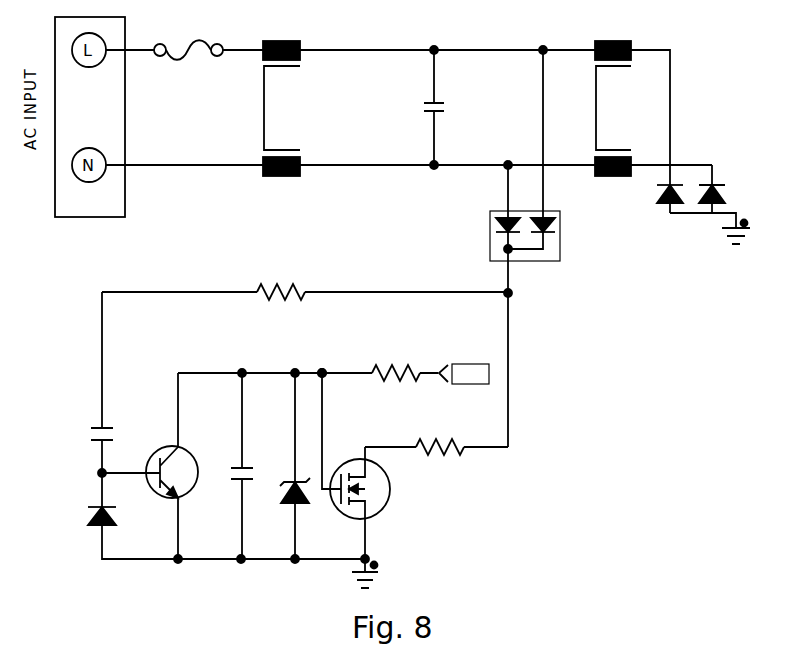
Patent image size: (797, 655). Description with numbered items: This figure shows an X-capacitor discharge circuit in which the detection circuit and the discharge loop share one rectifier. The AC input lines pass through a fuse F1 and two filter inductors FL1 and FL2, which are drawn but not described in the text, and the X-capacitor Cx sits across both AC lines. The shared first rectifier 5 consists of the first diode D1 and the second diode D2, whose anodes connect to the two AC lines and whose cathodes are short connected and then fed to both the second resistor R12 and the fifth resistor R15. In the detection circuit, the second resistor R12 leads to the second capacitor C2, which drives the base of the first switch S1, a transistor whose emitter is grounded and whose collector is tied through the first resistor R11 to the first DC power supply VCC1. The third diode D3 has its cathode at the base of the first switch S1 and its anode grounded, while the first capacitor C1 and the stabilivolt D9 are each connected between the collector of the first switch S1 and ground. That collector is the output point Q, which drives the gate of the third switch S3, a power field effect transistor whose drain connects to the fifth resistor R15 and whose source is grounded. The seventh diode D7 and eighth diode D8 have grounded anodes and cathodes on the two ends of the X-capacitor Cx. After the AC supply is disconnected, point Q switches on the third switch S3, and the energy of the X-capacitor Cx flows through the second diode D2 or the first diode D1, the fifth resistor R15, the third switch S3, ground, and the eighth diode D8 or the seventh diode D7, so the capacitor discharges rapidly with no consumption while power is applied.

The fuse F1 is at (188, 36).
The first filter inductor FL1 is at (281, 97).
The second filter inductor FL2 is at (612, 97).
The X-capacitor Cx is at (424, 107).
The first diode D1 is at (490, 225).
The second diode D2 is at (560, 225).
The first rectifier 5 is at (527, 263).
The seventh diode D7 is at (660, 193).
The eighth diode D8 is at (725, 193).
The second resistor R12 is at (280, 285).
The first resistor R11 is at (400, 365).
The fifth resistor R15 is at (440, 440).
The output point Q is at (322, 361).
The first DC power supply VCC1 is at (464, 374).
The first capacitor C1 is at (238, 465).
The second capacitor C2 is at (92, 433).
The third diode D3 is at (88, 523).
The stabilivolt D9 is at (292, 478).
The first switch S1 is at (155, 455).
The third switch S3 is at (385, 510).